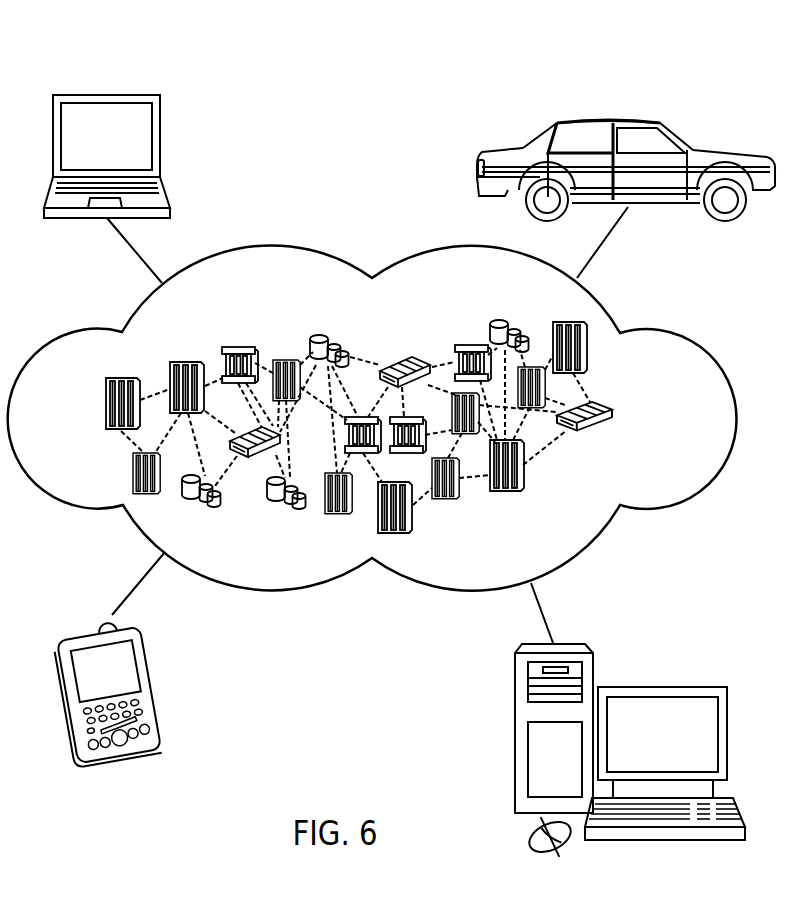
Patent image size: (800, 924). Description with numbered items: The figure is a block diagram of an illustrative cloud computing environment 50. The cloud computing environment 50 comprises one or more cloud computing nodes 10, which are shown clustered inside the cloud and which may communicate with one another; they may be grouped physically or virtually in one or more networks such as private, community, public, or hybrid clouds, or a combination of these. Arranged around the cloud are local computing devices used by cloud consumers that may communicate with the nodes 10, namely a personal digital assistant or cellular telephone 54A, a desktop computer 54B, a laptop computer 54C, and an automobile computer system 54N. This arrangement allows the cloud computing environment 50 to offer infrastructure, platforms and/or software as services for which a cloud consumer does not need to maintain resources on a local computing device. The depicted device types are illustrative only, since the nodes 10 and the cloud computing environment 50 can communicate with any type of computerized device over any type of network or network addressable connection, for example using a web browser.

The cloud computing environment 50 is at (677, 335).
The cloud computing node 10 is at (624, 420).
The personal digital assistant or cellular telephone 54A is at (90, 632).
The desktop computer 54B is at (662, 686).
The laptop computer 54C is at (107, 95).
The automobile computer system 54N is at (605, 122).